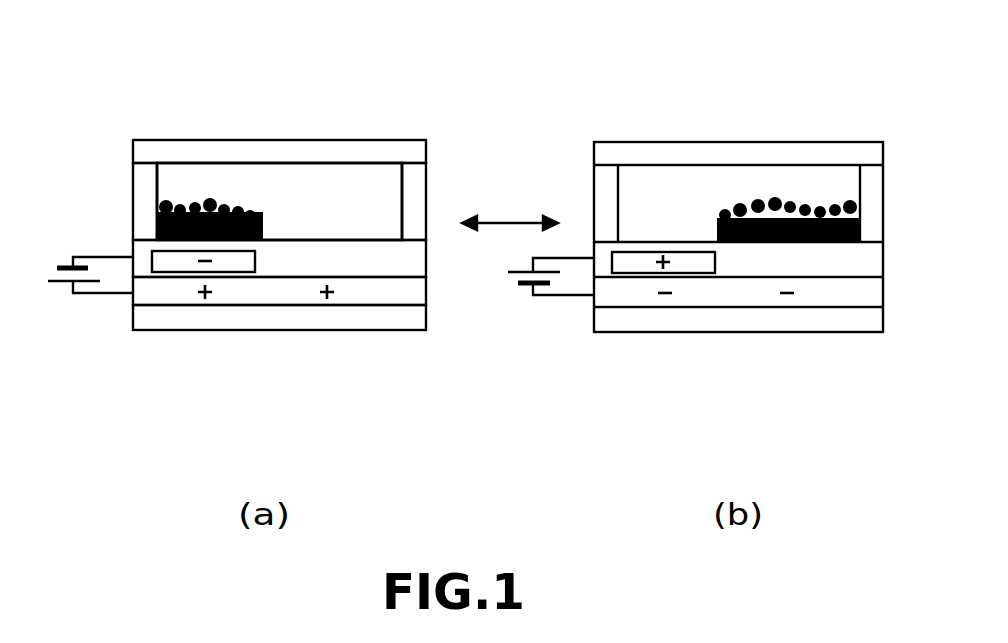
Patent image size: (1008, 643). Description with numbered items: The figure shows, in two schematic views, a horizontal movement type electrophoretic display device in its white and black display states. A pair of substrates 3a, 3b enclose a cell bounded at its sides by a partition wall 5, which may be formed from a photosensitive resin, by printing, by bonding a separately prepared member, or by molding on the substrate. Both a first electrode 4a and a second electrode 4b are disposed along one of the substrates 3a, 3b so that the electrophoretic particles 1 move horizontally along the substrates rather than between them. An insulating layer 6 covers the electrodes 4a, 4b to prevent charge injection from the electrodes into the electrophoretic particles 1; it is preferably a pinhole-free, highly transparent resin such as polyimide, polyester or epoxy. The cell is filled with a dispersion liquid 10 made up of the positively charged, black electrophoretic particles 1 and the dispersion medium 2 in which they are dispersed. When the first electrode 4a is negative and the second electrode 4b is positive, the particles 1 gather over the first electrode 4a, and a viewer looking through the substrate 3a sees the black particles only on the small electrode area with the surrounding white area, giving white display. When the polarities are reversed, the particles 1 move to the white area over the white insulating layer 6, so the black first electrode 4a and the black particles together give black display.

The electrophoretic particles 1 is at (217, 187).
The dispersion medium 2 is at (173, 170).
The substrate 3a is at (370, 150).
The substrate 3b is at (362, 320).
The first electrode 4a is at (168, 263).
The second electrode 4b is at (400, 297).
The partition wall 5 is at (138, 218).
The insulating layer 6 is at (415, 255).
The dispersion liquid 10 is at (372, 198).